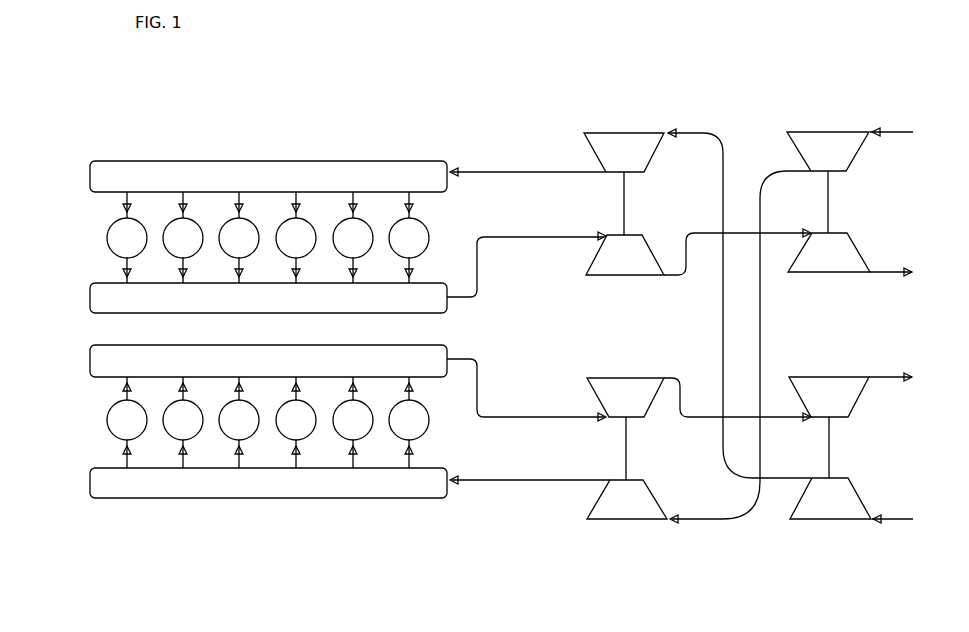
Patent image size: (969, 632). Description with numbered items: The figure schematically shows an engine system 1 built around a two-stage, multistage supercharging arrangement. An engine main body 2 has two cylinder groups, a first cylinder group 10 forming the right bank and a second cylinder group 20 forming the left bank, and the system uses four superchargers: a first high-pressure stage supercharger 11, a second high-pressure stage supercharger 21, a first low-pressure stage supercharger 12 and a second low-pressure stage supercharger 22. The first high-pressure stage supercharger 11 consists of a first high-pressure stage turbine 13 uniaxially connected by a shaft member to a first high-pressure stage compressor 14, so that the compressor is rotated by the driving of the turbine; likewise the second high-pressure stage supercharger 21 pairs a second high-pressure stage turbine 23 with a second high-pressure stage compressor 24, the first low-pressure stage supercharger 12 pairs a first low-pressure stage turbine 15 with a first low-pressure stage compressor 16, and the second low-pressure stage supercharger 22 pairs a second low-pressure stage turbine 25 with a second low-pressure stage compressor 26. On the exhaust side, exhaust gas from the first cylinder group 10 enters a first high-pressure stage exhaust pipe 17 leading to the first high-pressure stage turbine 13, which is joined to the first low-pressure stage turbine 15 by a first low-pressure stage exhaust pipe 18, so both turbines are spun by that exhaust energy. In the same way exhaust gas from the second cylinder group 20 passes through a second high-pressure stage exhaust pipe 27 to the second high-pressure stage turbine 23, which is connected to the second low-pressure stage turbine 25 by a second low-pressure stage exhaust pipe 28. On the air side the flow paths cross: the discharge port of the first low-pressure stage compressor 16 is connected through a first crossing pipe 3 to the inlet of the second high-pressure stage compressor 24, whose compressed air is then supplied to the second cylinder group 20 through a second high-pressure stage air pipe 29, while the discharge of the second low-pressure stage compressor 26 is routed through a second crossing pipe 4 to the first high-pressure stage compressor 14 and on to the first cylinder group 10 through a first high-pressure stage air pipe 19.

The engine system 1 is at (58, 93).
The engine main body 2 is at (330, 138).
The first cylinder group 10 is at (76, 173).
The second cylinder group 20 is at (76, 364).
The first high-pressure stage supercharger 11 is at (653, 128).
The first low-pressure stage supercharger 12 is at (858, 128).
The first high-pressure stage turbine 13 is at (645, 276).
The first high-pressure stage compressor 14 is at (602, 133).
The first low-pressure stage turbine 15 is at (849, 273).
The first low-pressure stage compressor 16 is at (806, 132).
The first high-pressure stage exhaust pipe 17 is at (480, 268).
The first low-pressure stage exhaust pipe 18 is at (746, 236).
The first high-pressure stage air pipe 19 is at (480, 171).
The second high-pressure stage supercharger 21 is at (656, 526).
The second low-pressure stage supercharger 22 is at (862, 526).
The second high-pressure stage turbine 23 is at (611, 377).
The second high-pressure stage compressor 24 is at (604, 520).
The second low-pressure stage turbine 25 is at (814, 376).
The second low-pressure stage compressor 26 is at (811, 520).
The second high-pressure stage exhaust pipe 27 is at (480, 392).
The second low-pressure stage exhaust pipe 28 is at (746, 416).
The second high-pressure stage air pipe 29 is at (489, 483).
The first crossing pipe 3 is at (742, 521).
The second crossing pipe 4 is at (716, 151).